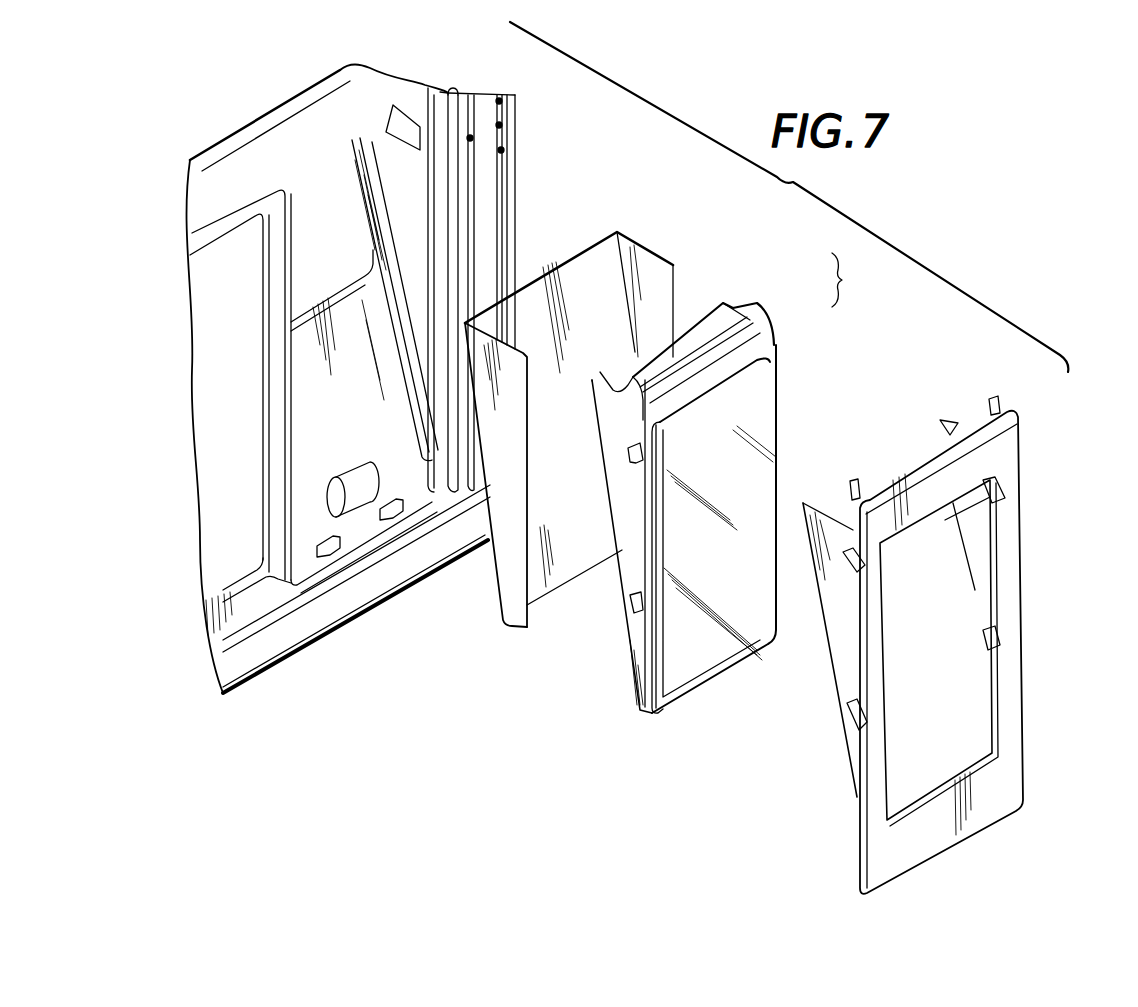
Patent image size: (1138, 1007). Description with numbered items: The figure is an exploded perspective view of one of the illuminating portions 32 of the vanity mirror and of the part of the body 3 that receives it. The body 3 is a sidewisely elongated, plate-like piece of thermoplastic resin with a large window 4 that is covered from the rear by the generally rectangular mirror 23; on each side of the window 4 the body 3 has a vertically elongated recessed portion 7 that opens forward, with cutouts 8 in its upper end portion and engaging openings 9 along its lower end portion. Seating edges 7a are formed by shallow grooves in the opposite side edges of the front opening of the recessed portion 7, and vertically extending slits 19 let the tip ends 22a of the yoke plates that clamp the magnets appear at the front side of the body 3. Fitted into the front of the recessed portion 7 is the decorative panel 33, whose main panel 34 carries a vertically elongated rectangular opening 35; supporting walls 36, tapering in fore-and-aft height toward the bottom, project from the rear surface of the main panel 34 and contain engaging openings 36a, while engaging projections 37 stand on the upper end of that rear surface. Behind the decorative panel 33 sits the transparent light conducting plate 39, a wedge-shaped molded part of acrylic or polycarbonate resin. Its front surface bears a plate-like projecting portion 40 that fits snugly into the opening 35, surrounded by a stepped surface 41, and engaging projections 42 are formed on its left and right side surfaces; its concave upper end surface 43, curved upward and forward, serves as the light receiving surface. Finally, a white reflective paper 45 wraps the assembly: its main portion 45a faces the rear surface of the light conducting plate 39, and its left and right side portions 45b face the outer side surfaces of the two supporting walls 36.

The body 3 is at (243, 688).
The window 4 is at (309, 645).
The recessed portion 7 is at (403, 180).
The seating edge 7a is at (293, 398).
The cutout 8 is at (412, 122).
The engaging opening 9 is at (330, 558).
The slit 19 is at (472, 142).
The tip end of yoke plate 22a is at (508, 78).
The mirror 23 is at (270, 655).
The illuminating portion 32 is at (516, 757).
The decorative panel 33 is at (910, 457).
The main panel 34 is at (974, 652).
The opening 35 is at (996, 530).
The supporting wall 36 is at (803, 503).
The engaging opening 36a is at (997, 512).
The engaging projection 37 is at (853, 480).
The light conducting plate 39 is at (716, 481).
The projecting portion 40 is at (757, 397).
The stepped surface 41 is at (653, 567).
The engaging projection 42 is at (636, 462).
The upper end surface 43 is at (723, 310).
The reflective paper 45 is at (600, 402).
The main portion of reflective paper 45a is at (583, 290).
The side portion of reflective paper 45b is at (657, 290).